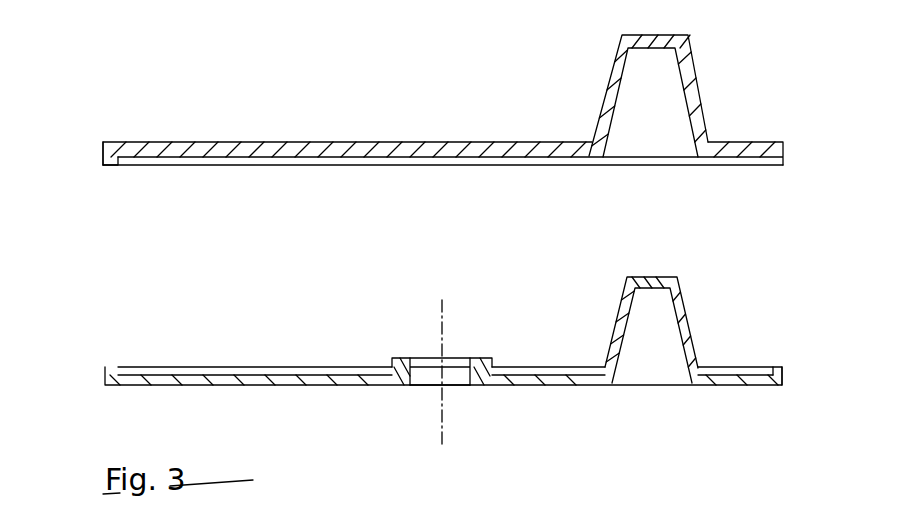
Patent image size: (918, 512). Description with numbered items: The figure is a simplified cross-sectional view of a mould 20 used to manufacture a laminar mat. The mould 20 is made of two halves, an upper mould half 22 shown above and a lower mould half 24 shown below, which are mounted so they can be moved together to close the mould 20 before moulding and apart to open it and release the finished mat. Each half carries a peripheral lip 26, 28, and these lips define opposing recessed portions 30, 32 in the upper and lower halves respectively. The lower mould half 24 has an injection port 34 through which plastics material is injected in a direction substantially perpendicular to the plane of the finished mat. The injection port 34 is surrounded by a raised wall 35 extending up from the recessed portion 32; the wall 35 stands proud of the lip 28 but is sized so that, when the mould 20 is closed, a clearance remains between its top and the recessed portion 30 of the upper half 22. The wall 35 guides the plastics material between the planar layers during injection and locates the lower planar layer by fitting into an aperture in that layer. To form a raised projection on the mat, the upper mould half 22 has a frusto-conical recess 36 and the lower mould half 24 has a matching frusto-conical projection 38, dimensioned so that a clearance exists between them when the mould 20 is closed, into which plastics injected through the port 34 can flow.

The mould 20 is at (106, 112).
The upper mould half 22 is at (262, 140).
The lower mould half 24 is at (518, 387).
The peripheral lip 26 is at (110, 167).
The peripheral lip 28 is at (772, 367).
The recessed portion 30 is at (347, 158).
The recessed portion 32 is at (330, 367).
The injection port 34 is at (428, 387).
The raised wall 35 is at (477, 352).
The frusto-conical recess 36 is at (650, 50).
The frusto-conical projection 38 is at (643, 275).